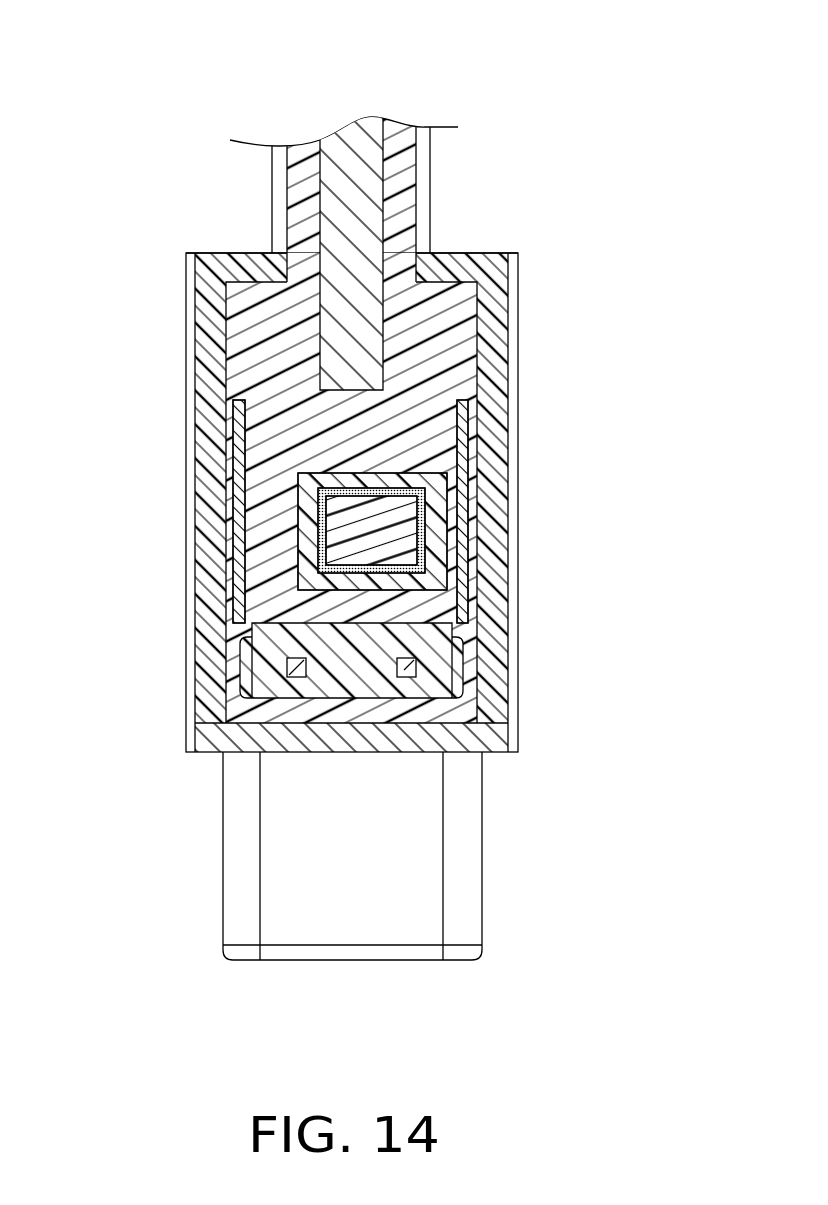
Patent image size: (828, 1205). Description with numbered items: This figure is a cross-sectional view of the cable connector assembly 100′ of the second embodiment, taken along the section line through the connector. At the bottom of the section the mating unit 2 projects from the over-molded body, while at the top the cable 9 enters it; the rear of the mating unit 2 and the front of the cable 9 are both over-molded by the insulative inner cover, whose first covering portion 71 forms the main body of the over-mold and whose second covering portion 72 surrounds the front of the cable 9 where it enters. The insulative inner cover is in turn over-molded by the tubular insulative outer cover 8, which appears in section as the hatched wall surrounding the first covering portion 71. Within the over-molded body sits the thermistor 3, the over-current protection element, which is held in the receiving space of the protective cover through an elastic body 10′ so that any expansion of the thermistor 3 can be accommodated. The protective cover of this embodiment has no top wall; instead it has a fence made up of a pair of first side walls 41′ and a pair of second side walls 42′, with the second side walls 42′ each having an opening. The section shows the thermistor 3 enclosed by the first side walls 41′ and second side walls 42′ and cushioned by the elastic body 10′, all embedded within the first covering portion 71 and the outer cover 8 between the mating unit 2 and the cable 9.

The cable connector assembly 100′ is at (247, 93).
The insulative outer cover 8 is at (213, 347).
The first covering portion 71 is at (450, 320).
The second covering portion 72 is at (305, 203).
The cable 9 is at (360, 178).
The elastic body 10′ is at (253, 543).
The second side walls 42′ is at (447, 522).
The first side walls 41′ is at (380, 581).
The over-current protection element (thermistor) 3 is at (373, 527).
The mating unit 2 is at (408, 852).